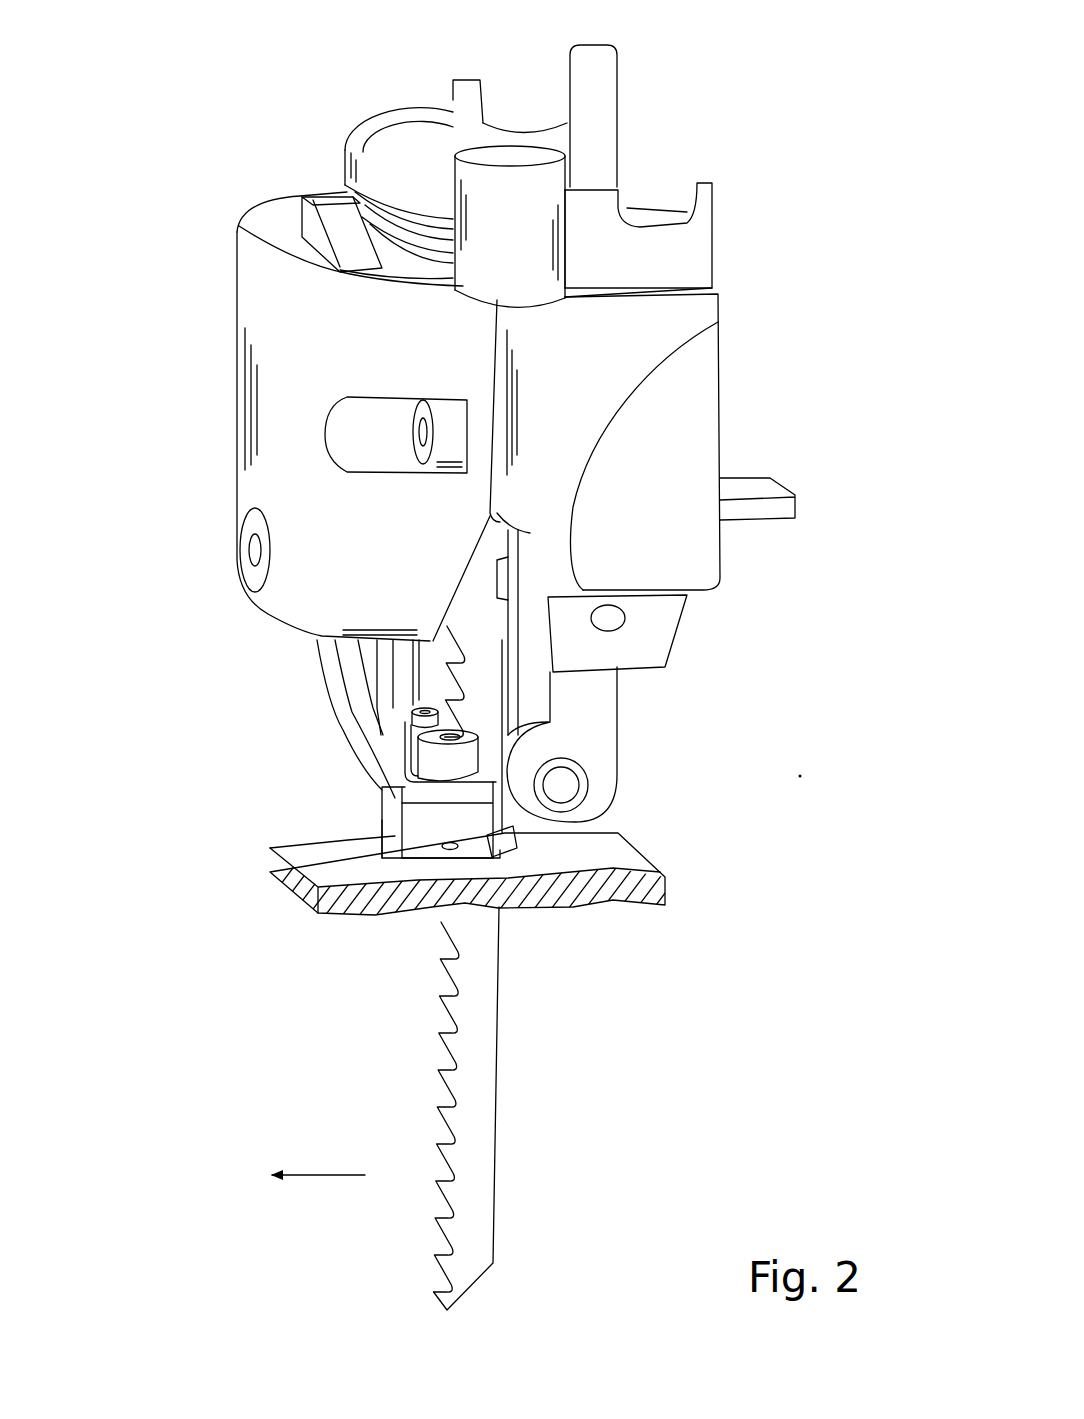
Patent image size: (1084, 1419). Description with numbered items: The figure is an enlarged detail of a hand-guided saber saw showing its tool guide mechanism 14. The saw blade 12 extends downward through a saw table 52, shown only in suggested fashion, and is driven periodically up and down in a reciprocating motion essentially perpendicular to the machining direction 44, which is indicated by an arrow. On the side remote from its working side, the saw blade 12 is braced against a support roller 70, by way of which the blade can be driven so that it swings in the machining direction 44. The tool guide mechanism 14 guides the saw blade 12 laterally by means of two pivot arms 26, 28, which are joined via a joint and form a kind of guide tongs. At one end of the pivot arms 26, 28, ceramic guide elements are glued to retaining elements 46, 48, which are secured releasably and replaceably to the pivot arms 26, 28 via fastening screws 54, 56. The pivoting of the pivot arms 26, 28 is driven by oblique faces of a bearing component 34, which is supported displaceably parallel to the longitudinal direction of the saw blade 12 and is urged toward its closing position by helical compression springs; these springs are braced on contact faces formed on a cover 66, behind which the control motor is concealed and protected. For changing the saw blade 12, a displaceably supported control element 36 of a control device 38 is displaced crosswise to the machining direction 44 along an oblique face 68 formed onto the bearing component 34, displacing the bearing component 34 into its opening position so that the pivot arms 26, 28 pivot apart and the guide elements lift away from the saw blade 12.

The saw blade 12 is at (475, 1050).
The tool guide mechanism 14 is at (325, 716).
The pivot arm 26 is at (347, 740).
The pivot arm 28 is at (398, 743).
The bearing component 34 is at (298, 203).
The control element 36 is at (508, 208).
The control device 38 is at (572, 211).
The machining direction 44 is at (320, 1177).
The retaining element 46 is at (390, 817).
The retaining element 48 is at (432, 840).
The saw table 52 is at (602, 862).
The fastening screw 54 is at (418, 725).
The fastening screw 56 is at (455, 758).
The cover 66 is at (300, 388).
The oblique face 68 is at (345, 232).
The support roller 70 is at (563, 784).